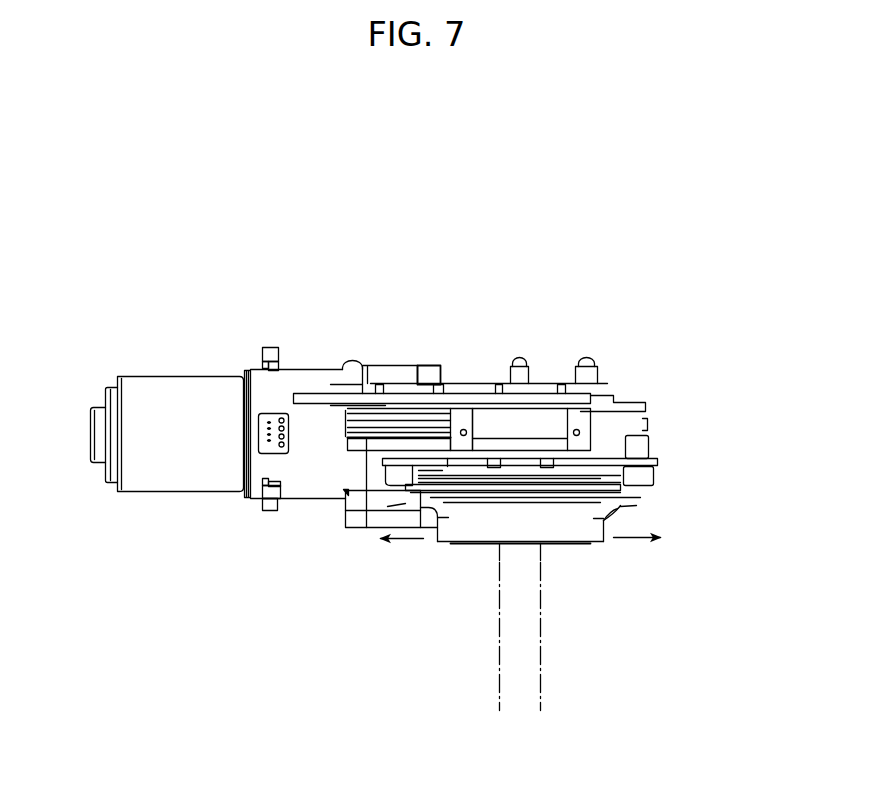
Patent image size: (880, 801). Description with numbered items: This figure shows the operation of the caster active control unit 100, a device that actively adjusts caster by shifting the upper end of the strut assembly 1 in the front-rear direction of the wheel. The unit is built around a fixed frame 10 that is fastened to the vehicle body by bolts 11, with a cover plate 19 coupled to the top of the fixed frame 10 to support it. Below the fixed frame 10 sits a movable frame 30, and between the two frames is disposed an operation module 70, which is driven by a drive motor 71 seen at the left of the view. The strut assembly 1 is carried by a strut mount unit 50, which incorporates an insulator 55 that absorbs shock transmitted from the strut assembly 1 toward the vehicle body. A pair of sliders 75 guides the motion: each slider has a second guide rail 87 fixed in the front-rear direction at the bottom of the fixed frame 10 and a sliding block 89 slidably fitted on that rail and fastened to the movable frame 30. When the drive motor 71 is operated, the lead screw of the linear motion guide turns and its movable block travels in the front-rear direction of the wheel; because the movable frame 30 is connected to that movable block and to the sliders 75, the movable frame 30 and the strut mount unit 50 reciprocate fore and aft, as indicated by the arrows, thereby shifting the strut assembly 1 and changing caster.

The caster active control unit 100 is at (420, 176).
The strut assembly 1 is at (544, 643).
The fixed frame 10 is at (468, 400).
The bolts 11 is at (513, 356).
The cover plate 19 is at (450, 390).
The movable frame 30 is at (523, 458).
The strut mount unit 50 is at (450, 548).
The insulator 55 is at (605, 508).
The operation module 70 is at (266, 517).
The drive motor 71 is at (160, 392).
The sliders 75 is at (425, 441).
The second guide rail 87 is at (406, 400).
The sliding block 89 is at (553, 428).